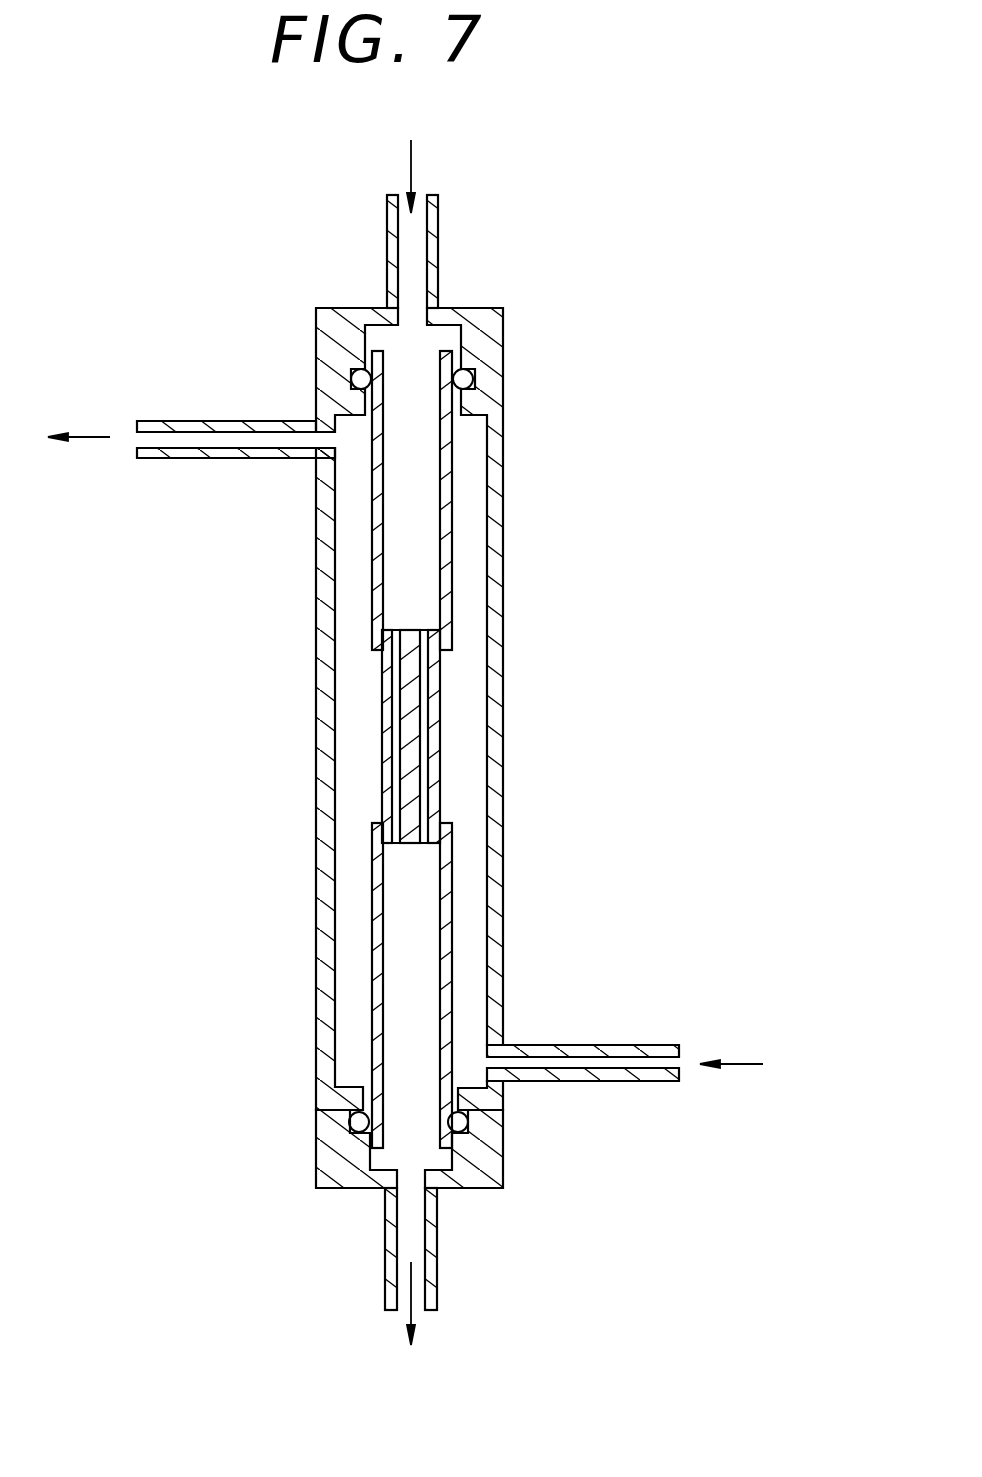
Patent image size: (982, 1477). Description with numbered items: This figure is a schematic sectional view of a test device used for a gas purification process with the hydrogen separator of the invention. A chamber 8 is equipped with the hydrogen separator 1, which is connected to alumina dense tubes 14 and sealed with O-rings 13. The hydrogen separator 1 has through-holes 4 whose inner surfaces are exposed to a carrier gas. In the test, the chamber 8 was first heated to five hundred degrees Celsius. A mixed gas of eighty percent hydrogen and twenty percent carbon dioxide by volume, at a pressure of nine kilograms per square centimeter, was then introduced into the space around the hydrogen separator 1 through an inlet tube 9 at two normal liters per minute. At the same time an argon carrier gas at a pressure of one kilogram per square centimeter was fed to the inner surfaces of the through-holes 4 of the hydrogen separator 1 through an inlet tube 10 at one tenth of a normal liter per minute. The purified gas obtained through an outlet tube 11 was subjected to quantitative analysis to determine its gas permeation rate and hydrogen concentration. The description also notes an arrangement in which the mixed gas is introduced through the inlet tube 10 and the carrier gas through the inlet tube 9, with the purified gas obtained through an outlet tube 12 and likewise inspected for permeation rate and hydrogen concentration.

The hydrogen separator 1 is at (437, 693).
The through-holes 4 is at (397, 777).
The chamber 8 is at (498, 595).
The inlet tube 9 is at (613, 1045).
The inlet tube 10 is at (440, 233).
The outlet tube 11 is at (437, 1252).
The outlet tube 12 is at (219, 420).
The O-rings 13 is at (466, 1125).
The alumina dense tubes 14 is at (452, 518).